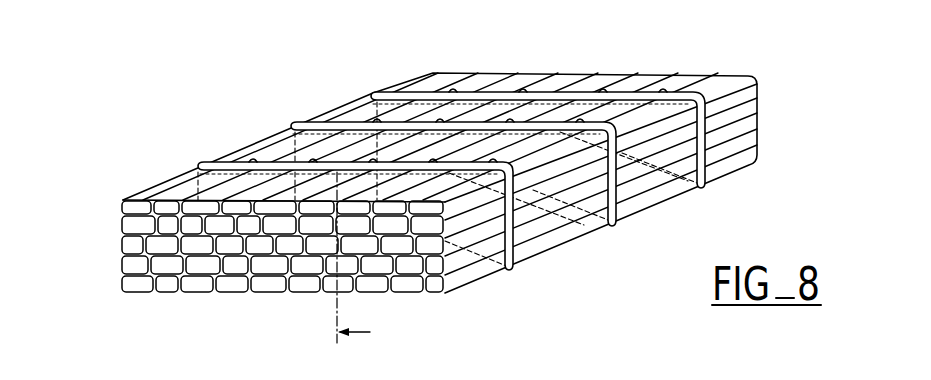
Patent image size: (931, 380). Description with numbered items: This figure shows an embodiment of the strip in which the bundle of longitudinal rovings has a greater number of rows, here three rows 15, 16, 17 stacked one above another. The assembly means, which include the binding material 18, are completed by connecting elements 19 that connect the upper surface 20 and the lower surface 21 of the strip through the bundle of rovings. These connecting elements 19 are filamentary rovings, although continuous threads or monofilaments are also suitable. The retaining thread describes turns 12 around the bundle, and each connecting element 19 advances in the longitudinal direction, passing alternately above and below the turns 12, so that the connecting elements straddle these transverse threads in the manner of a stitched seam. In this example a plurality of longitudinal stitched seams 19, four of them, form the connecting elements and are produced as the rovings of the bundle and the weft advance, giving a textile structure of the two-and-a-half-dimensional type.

The turns 12 is at (707, 182).
The row 15 is at (440, 270).
The row 16 is at (443, 243).
The row 17 is at (445, 222).
The binding material 18 is at (140, 250).
The connecting element 19 is at (380, 121).
The upper surface 20 is at (133, 205).
The lower surface 21 is at (127, 287).